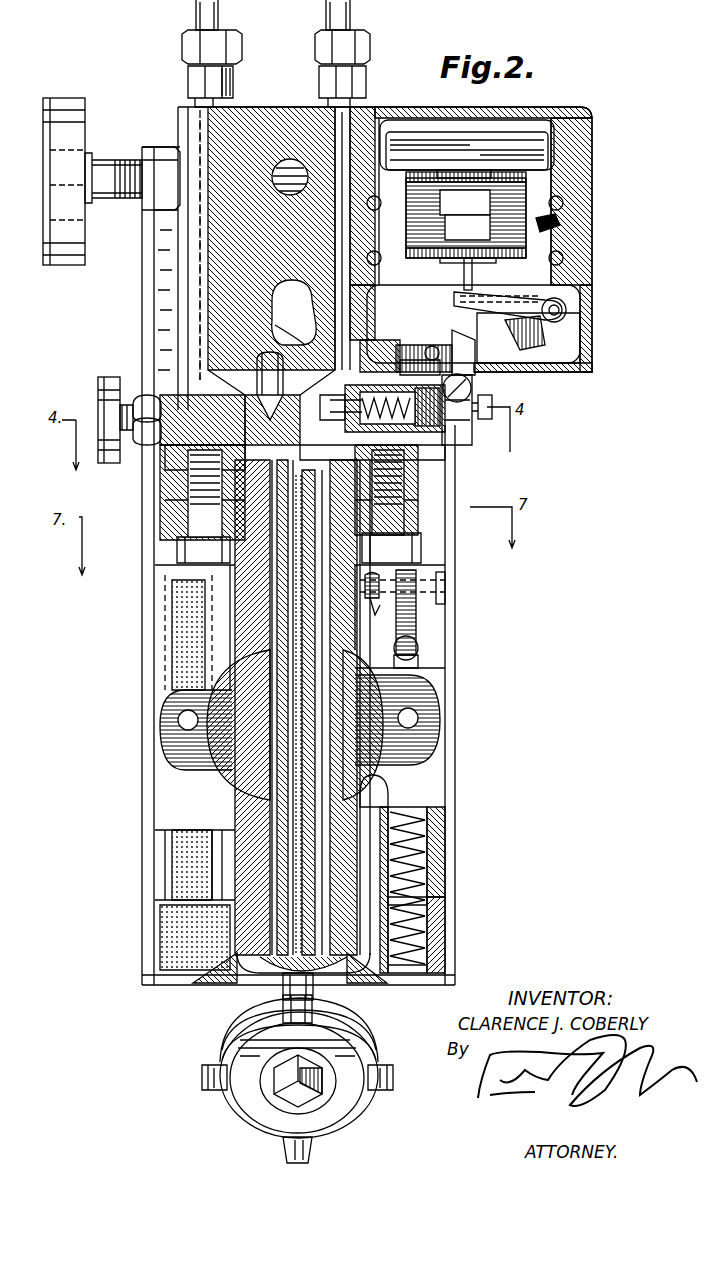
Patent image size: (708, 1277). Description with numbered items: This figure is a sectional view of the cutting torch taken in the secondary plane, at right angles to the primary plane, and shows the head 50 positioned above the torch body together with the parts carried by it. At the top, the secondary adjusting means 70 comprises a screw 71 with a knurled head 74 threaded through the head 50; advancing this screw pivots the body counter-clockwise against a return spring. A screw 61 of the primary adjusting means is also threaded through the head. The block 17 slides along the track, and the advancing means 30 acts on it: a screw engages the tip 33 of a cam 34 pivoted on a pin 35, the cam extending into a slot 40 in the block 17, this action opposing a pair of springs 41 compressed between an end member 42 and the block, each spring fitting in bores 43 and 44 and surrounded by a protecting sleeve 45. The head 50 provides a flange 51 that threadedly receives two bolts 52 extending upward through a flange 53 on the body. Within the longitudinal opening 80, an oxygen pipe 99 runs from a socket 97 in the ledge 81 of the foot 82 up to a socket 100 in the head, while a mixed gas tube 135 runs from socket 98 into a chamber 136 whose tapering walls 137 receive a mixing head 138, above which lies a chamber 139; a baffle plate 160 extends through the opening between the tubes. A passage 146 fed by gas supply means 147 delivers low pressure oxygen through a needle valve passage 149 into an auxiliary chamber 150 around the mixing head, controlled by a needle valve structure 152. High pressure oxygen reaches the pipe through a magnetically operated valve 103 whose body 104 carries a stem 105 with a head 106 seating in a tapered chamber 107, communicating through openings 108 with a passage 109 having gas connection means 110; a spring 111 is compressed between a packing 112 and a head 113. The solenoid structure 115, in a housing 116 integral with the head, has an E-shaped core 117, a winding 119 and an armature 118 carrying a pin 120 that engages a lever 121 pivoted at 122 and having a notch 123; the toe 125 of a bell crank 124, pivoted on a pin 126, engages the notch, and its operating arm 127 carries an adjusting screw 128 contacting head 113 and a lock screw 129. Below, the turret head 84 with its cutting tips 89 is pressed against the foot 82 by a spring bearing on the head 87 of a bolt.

The gas supply means 147 is at (215, 47).
The gas connection means 110 is at (362, 50).
The knurled head 74 is at (72, 108).
The screw 71 is at (103, 160).
The secondary adjusting means 70 is at (128, 140).
The passage 146 is at (210, 232).
The chamber 139 is at (205, 350).
The screw 61 is at (288, 162).
The passage 109 is at (372, 135).
The armature 118 is at (486, 156).
The housing 116 is at (536, 196).
The winding 119 is at (515, 205).
The core 117 is at (545, 215).
The solenoid structure 115 is at (555, 228).
The pin 120 is at (470, 272).
The lever 121 is at (485, 305).
The pivot 122 is at (563, 308).
The notch 123 is at (545, 336).
The toe 125 is at (593, 370).
The bell crank 124 is at (535, 370).
The stem 105 is at (294, 312).
The head 106 is at (290, 327).
The openings 108 is at (360, 304).
The packing 112 is at (362, 320).
The spring 111 is at (405, 365).
The magnetically operated valve 103 is at (378, 372).
The pin 126 is at (433, 346).
The body 104 is at (462, 352).
The head 113 is at (456, 378).
The lock screw 129 is at (472, 389).
The adjusting screw 128 is at (492, 408).
The operating arm 127 is at (492, 412).
The tapered chamber 107 is at (390, 428).
The auxiliary chamber 150 is at (215, 380).
The needle valve passage 149 is at (213, 382).
The needle valve structure 152 is at (105, 408).
The tapering walls 137 is at (160, 448).
The chamber 136 is at (258, 470).
The mixing head 138 is at (195, 550).
The flange 53 is at (175, 505).
The bolts 52 is at (190, 523).
The flange 51 is at (420, 470).
The socket 100 is at (418, 448).
The oxygen pipe 99 is at (440, 726).
The mixed gas tube 135 is at (262, 795).
The opening 80 is at (210, 752).
The pin 35 is at (405, 598).
The slot 40 is at (410, 590).
The advancing means 30 is at (415, 620).
The cam 34 is at (410, 633).
The tip 33 is at (422, 648).
The block 17 is at (428, 660).
The baffle plate 160 is at (440, 677).
The bore 44 is at (440, 792).
The springs 41 is at (420, 870).
The protecting sleeve 45 is at (430, 838).
The end member 42 is at (430, 930).
The bore 43 is at (430, 960).
The ledge 81 is at (236, 960).
The socket 98 is at (270, 968).
The socket 97 is at (360, 992).
The foot 82 is at (375, 1022).
The turret head 84 is at (368, 1052).
The head 87 is at (310, 1090).
The cutting tips 89 is at (204, 1077).
The head 50 is at (95, 357).